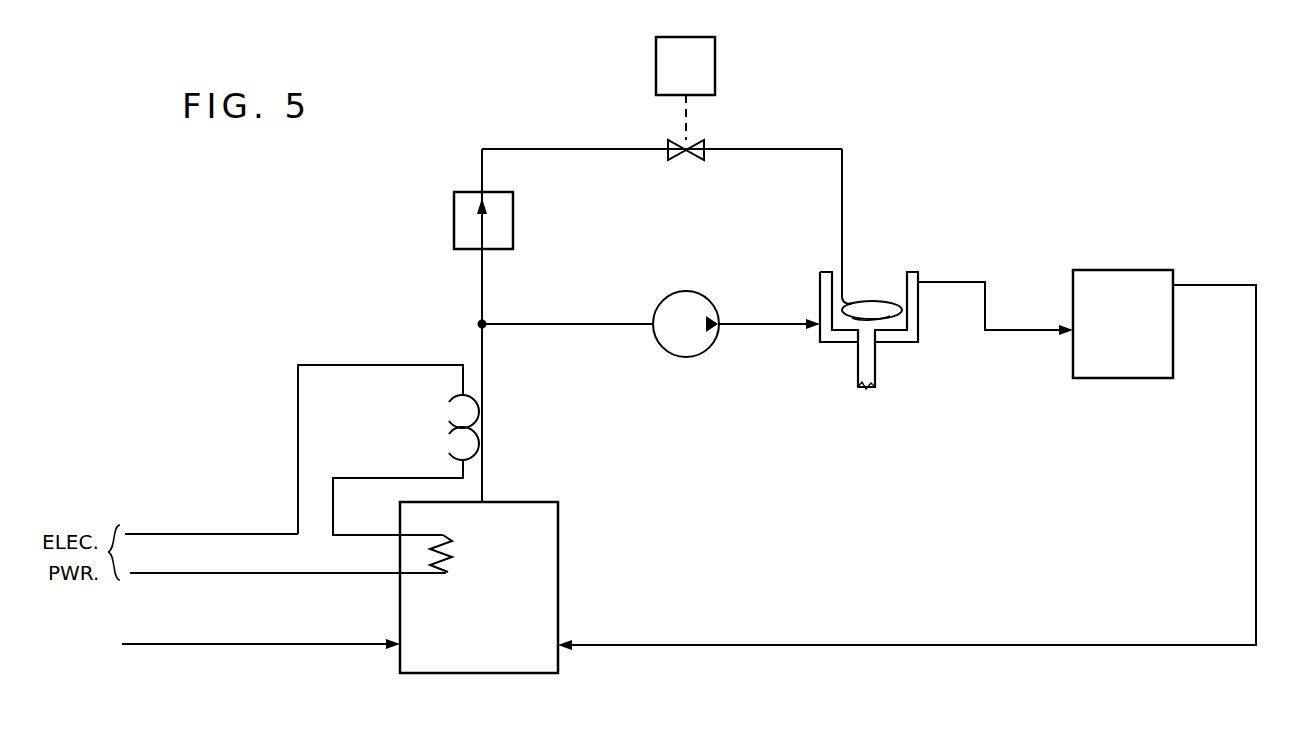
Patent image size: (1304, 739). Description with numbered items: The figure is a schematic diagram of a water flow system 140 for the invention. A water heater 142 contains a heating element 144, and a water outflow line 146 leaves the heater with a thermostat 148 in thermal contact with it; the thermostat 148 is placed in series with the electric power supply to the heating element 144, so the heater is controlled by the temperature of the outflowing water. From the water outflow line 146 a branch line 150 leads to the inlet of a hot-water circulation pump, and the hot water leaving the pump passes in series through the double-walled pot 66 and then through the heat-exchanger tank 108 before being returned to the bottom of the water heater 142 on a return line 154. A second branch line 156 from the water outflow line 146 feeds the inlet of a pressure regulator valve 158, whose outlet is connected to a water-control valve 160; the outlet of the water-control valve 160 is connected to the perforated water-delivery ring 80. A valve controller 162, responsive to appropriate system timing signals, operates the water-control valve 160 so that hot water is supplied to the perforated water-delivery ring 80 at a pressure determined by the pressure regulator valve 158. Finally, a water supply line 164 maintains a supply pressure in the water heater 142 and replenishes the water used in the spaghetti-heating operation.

The water flow system 140 is at (1065, 152).
The valve controller 162 is at (715, 58).
The water-control valve 160 is at (690, 153).
The pressure regulator valve 158 is at (453, 208).
The second branch line 156 is at (480, 305).
The branch line 150 is at (604, 296).
The perforated water-delivery ring 80 is at (870, 300).
The double-walled pot 66 is at (910, 345).
The heat-exchanger tank 108 is at (1125, 380).
The return line 154 is at (910, 648).
The water heater 142 is at (540, 546).
The water outflow line 146 is at (482, 487).
The thermostat 148 is at (450, 430).
The heating element 144 is at (446, 574).
The water supply line 164 is at (300, 646).